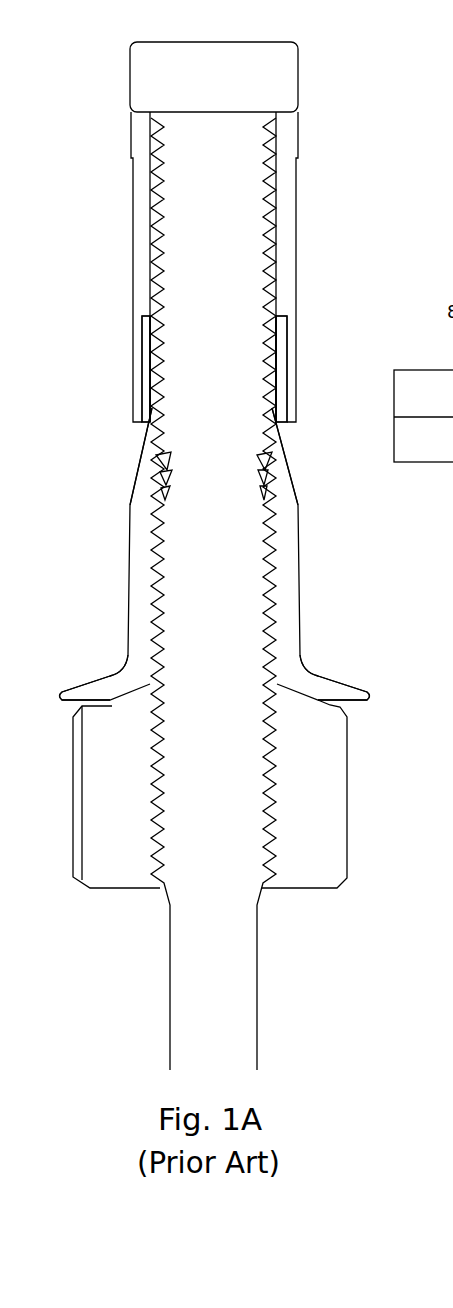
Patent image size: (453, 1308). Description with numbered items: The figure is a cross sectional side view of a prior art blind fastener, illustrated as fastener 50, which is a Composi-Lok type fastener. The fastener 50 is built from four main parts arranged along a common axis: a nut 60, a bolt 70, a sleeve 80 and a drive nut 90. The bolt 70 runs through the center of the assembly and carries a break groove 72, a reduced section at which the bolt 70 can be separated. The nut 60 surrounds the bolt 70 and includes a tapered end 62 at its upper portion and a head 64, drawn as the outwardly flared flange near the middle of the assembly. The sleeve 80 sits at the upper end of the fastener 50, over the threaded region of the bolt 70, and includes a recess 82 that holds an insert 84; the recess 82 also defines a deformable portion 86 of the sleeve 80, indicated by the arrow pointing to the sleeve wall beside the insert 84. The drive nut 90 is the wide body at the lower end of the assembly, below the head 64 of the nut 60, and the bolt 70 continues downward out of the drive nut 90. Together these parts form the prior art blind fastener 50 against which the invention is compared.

The fastener 50 is at (93, 222).
The bolt 70 is at (243, 67).
The sleeve 80 is at (287, 182).
The recess 82 is at (280, 312).
The insert 84 is at (282, 346).
The deformable portion 86 is at (308, 353).
The nut 60 is at (280, 603).
The tapered end 62 is at (288, 466).
The head 64 is at (345, 688).
The break groove 72 is at (158, 458).
The drive nut 90 is at (290, 748).